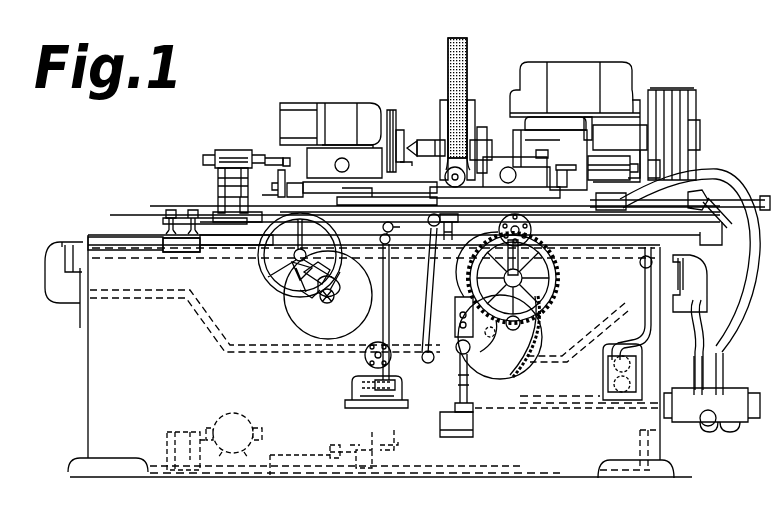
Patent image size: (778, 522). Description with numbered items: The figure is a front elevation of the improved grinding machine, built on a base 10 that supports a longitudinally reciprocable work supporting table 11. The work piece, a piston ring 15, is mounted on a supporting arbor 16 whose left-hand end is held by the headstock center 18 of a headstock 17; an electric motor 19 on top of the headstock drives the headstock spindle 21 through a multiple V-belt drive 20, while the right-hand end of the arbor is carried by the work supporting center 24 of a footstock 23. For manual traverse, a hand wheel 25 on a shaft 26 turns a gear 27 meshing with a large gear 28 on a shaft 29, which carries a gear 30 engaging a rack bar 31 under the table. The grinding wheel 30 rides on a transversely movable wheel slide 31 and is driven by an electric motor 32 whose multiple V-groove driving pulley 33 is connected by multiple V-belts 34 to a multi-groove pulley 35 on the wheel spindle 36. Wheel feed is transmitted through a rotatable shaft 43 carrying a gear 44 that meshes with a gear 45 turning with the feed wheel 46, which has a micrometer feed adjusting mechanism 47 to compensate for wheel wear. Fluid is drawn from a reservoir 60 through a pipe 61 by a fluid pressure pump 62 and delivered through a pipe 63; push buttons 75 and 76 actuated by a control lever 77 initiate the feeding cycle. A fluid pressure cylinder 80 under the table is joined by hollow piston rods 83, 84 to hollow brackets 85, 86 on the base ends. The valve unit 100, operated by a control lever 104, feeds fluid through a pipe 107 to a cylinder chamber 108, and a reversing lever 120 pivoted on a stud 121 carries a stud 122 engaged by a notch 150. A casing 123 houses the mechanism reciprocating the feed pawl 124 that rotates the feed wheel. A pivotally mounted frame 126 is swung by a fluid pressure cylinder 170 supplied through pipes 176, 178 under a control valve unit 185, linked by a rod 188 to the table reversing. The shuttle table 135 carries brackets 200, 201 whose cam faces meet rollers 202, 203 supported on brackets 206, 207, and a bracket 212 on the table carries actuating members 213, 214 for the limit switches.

The base 10 is at (612, 472).
The work supporting table 11 is at (739, 192).
The piston ring 15 is at (445, 140).
The supporting arbor 16 is at (428, 140).
The headstock 17 is at (360, 148).
The headstock center 18 is at (402, 130).
The electric motor 19 is at (342, 103).
The multiple V-belt drive 20 is at (391, 110).
The headstock spindle 21 is at (410, 162).
The footstock 23 is at (540, 146).
The work supporting center 24 is at (477, 118).
The hand wheel 25 is at (262, 268).
The shaft 26 is at (288, 280).
The gear 27 is at (296, 280).
The large gear 28 is at (310, 290).
The shaft 29 is at (324, 300).
The grinding wheel 30 is at (448, 44).
The wheel slide 31 is at (562, 117).
The electric motor 32 is at (585, 68).
The multiple V-groove driving pulley 33 is at (692, 98).
The multiple V-belts 34 is at (696, 125).
The multi-groove pulley 35 is at (690, 160).
The wheel spindle 36 is at (640, 150).
The rotatable shaft 43 is at (486, 336).
The gear 44 is at (524, 368).
The gear 45 is at (534, 304).
The feed wheel 46 is at (556, 296).
The micrometer feed adjusting mechanism 47 is at (500, 236).
The reservoir 60 is at (516, 480).
The pipe 61 is at (190, 428).
The fluid pressure pump 62 is at (226, 410).
The pipe 63 is at (310, 448).
The push button 75 is at (614, 358).
The push button 76 is at (614, 384).
The control lever 77 is at (645, 286).
The fluid pressure cylinder 80 is at (396, 290).
The hollow piston rod 83 is at (86, 240).
The hollow piston rod 84 is at (694, 270).
The hollow bracket 85 is at (52, 288).
The hollow bracket 86 is at (710, 322).
The valve unit 100 is at (352, 400).
The control lever 104 is at (389, 328).
The pipe 107 is at (212, 342).
The cylinder chamber 108 is at (552, 358).
The reversing lever 120 is at (404, 282).
The stud 121 is at (384, 342).
The stud 122 is at (398, 228).
The casing 123 is at (474, 423).
The feed pawl 124 is at (469, 322).
The pivotally mounted frame 126 is at (485, 186).
The shuttle table 135 is at (290, 150).
The notch 150 is at (452, 232).
The fluid pressure cylinder 170 is at (680, 198).
The pipe 176 is at (704, 376).
The pipe 178 is at (724, 358).
The control valve unit 185 is at (726, 444).
The rod 188 is at (550, 404).
The bracket 200 is at (280, 176).
The bracket 201 is at (564, 170).
The roller 202 is at (240, 150).
The roller 203 is at (588, 132).
The bracket 206 is at (222, 152).
The bracket 207 is at (612, 166).
The bracket 212 is at (205, 218).
The actuating member 213 is at (162, 230).
The actuating member 214 is at (170, 214).